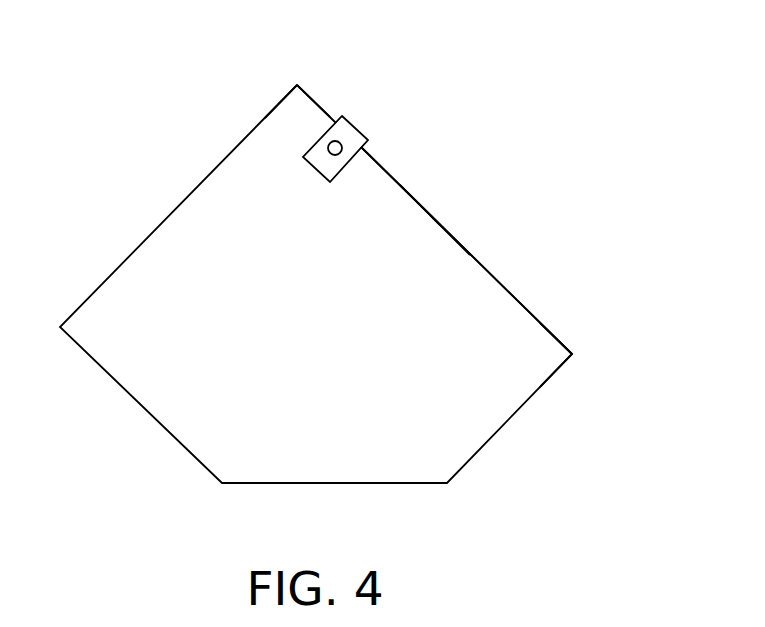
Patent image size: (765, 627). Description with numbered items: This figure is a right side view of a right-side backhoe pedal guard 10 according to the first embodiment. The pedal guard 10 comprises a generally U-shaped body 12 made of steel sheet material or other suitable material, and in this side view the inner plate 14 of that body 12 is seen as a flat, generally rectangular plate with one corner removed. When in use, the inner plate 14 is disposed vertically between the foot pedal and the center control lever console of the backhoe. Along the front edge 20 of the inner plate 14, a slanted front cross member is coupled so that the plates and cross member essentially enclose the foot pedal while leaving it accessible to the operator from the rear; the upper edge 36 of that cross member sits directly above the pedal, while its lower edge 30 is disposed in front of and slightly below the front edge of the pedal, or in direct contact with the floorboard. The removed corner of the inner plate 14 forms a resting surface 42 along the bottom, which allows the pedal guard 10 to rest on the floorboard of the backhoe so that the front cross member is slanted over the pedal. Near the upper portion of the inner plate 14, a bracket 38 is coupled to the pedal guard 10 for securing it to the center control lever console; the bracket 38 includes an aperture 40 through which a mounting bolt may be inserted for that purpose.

The pedal guard 10 is at (145, 88).
The body 12 is at (400, 240).
The inner plate 14 is at (440, 273).
The front edge 20 is at (516, 292).
The lower edge 30 is at (578, 358).
The upper edge 36 is at (301, 81).
The bracket 38 is at (355, 140).
The aperture 40 is at (342, 148).
The resting surface 42 is at (421, 500).